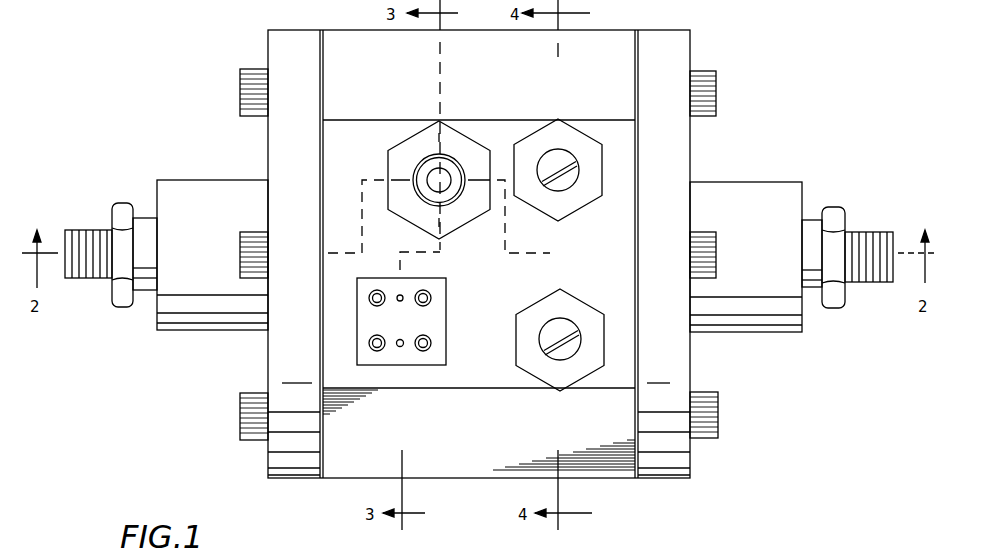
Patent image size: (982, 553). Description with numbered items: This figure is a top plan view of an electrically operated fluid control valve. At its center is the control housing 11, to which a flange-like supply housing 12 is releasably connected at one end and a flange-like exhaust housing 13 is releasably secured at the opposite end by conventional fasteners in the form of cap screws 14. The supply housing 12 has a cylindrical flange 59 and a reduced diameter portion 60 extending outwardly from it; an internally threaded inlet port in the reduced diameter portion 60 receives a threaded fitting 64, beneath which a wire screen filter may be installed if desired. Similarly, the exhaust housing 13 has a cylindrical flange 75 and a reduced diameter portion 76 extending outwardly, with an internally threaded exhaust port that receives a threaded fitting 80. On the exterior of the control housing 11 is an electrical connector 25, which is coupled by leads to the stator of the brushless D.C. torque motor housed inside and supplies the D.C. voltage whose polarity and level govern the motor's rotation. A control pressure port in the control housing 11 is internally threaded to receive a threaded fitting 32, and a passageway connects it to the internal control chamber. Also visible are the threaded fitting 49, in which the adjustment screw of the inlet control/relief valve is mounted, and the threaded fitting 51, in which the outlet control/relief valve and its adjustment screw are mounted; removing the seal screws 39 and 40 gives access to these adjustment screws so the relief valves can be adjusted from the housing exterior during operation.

The control housing 11 is at (462, 448).
The supply housing 12 is at (181, 356).
The exhaust housing 13 is at (745, 352).
The cap screws 14 is at (240, 84).
The electrical connector 25 is at (400, 367).
The threaded fitting 32 is at (410, 146).
The seal screw 39 is at (566, 200).
The seal screw 40 is at (566, 353).
The threaded fitting 49 is at (568, 143).
The threaded fitting 51 is at (574, 305).
The cylindrical flange 59 is at (298, 469).
The reduced diameter portion 60 is at (218, 180).
The threaded fitting 64 is at (116, 204).
The cylindrical flange 75 is at (661, 469).
The reduced diameter portion 76 is at (740, 182).
The threaded fitting 80 is at (835, 207).